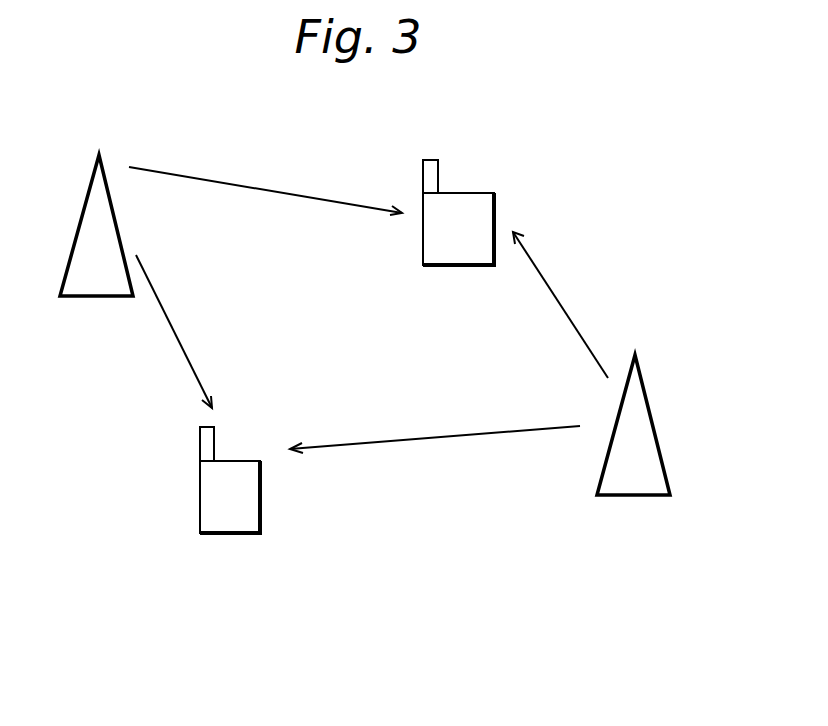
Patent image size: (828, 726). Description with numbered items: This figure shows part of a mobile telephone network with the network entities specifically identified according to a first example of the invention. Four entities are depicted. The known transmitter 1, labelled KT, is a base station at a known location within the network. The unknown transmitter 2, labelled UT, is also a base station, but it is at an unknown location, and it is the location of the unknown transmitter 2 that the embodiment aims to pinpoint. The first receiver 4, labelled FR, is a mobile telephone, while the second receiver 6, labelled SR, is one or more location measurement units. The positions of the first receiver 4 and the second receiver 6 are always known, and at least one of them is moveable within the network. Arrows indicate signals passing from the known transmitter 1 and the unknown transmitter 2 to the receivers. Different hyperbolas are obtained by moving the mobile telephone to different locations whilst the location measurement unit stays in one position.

The known transmitter 1 is at (73, 247).
The unknown transmitter 2 is at (657, 433).
The first receiver 4 is at (260, 505).
The second receiver 6 is at (494, 193).